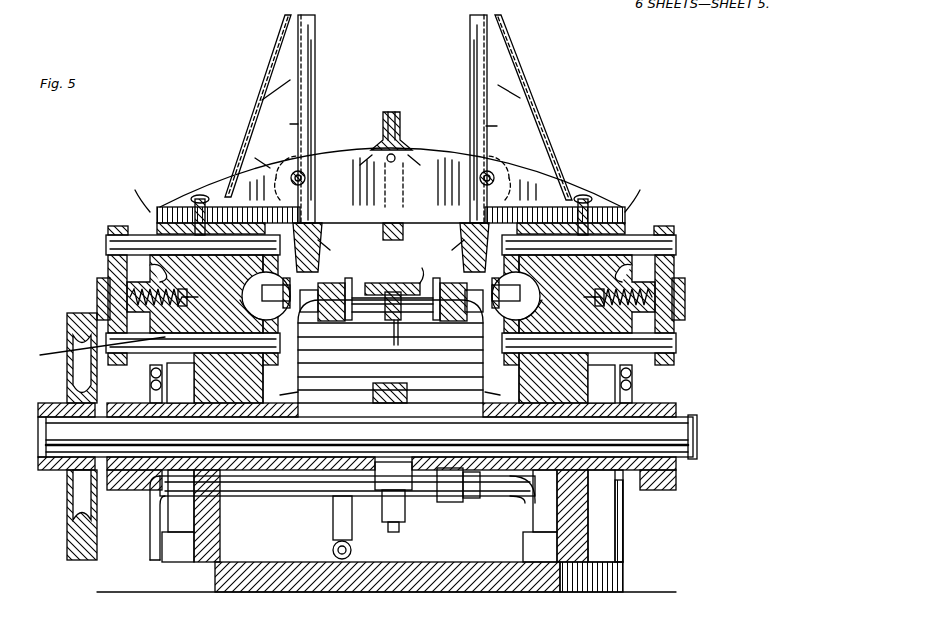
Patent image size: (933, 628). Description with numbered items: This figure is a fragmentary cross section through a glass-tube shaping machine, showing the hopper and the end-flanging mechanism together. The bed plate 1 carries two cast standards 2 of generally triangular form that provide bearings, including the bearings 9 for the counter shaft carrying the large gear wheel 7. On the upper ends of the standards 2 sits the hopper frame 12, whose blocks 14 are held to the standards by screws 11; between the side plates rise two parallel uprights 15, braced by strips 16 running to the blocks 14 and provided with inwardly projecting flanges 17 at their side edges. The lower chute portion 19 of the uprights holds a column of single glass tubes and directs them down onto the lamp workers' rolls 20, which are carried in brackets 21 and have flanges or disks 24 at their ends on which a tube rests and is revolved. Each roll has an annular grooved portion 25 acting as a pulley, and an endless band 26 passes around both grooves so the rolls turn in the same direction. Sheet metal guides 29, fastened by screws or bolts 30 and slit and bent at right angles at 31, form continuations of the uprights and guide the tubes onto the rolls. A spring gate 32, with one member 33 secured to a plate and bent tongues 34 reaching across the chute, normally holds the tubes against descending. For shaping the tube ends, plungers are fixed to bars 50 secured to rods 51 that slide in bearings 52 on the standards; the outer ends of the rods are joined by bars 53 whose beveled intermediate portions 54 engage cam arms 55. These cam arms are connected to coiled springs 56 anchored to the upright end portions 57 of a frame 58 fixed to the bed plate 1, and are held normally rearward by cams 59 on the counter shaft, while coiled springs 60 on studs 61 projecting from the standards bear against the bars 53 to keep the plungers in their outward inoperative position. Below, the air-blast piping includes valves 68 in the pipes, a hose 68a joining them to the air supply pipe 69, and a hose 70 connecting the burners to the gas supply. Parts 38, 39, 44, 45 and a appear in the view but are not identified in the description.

The bed plate 1 is at (385, 595).
The standards 2 is at (222, 530).
The large gear wheel 7 is at (70, 322).
The bearings 9 is at (388, 392).
The screws 11 is at (198, 197).
The hopper frame 12 is at (340, 152).
The blocks 14 is at (185, 206).
The uprights 15 is at (393, 124).
The strips 16 is at (272, 60).
The flanges 17 is at (316, 34).
The chute portion 19 is at (393, 124).
The rolls 20 is at (372, 318).
The brackets 21 is at (330, 322).
The flanges or disks 24 is at (310, 300).
The annular grooved portion 25 is at (394, 320).
The endless band 26 is at (400, 338).
The sheet metal guides 29 is at (391, 247).
The screws or bolts 30 is at (306, 179).
The bent guide portions 31 is at (391, 248).
The spring gate 32 is at (402, 118).
The gate member 33 is at (381, 231).
The bent tongues 34 is at (389, 164).
The frame 38 is at (410, 392).
The bolt 39 is at (391, 309).
The block 44 is at (373, 392).
The link 45 is at (370, 283).
The arm a is at (422, 266).
The bars 50 is at (248, 308).
The rods 51 is at (150, 228).
The bearings 52 is at (135, 190).
The bars 53 is at (112, 236).
The beveled intermediate portions 54 is at (108, 275).
The cam arms 55 is at (97, 283).
The coiled springs 56 is at (150, 372).
The upright end portions 57 is at (676, 355).
The frame 58 is at (389, 384).
The cams 59 is at (688, 395).
The coiled springs 60 is at (128, 297).
The studs 61 is at (391, 310).
The valves 68 is at (333, 535).
The hose 68a is at (322, 545).
The supply pipe 69 is at (500, 430).
The hose 70 is at (400, 518).